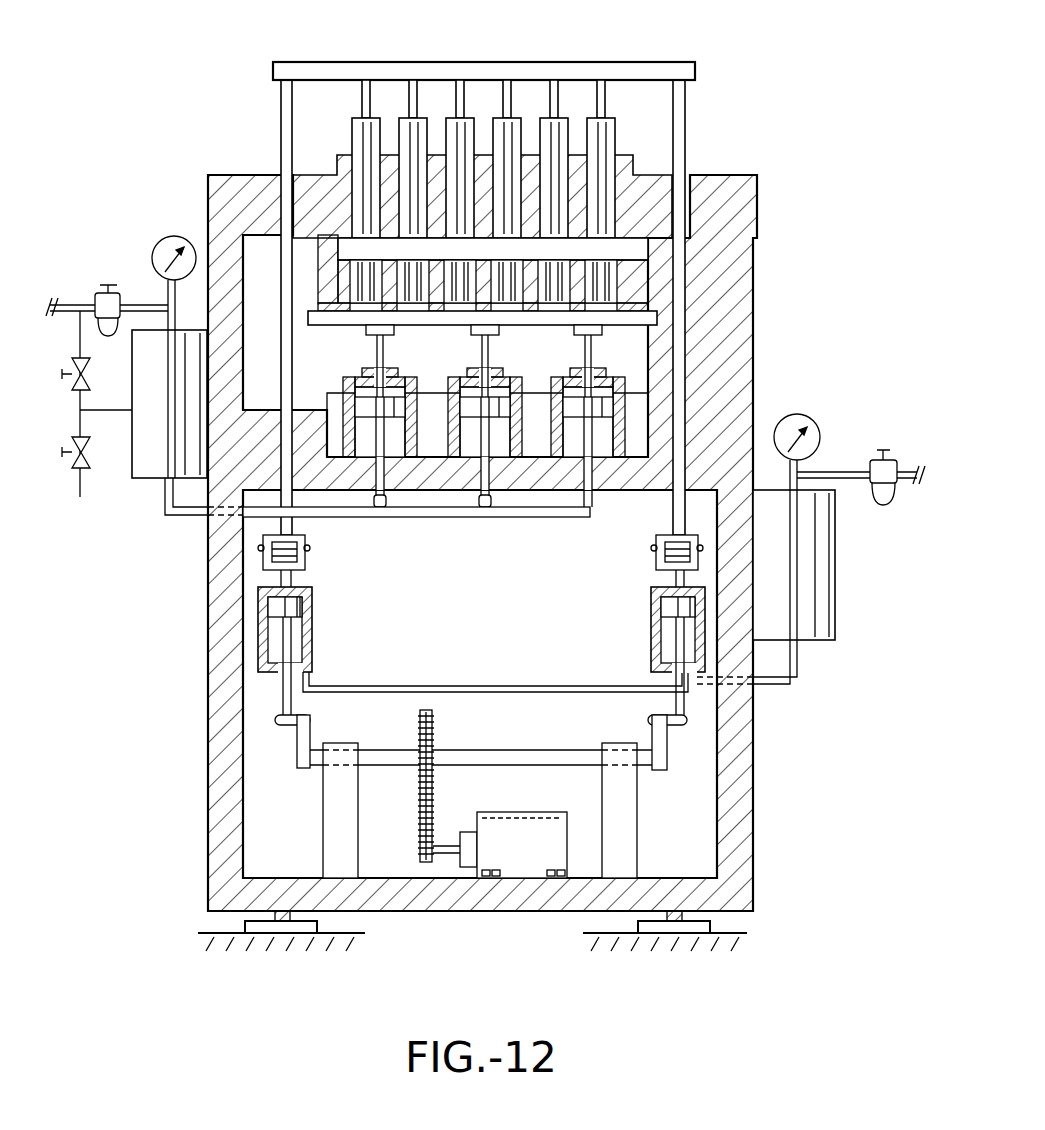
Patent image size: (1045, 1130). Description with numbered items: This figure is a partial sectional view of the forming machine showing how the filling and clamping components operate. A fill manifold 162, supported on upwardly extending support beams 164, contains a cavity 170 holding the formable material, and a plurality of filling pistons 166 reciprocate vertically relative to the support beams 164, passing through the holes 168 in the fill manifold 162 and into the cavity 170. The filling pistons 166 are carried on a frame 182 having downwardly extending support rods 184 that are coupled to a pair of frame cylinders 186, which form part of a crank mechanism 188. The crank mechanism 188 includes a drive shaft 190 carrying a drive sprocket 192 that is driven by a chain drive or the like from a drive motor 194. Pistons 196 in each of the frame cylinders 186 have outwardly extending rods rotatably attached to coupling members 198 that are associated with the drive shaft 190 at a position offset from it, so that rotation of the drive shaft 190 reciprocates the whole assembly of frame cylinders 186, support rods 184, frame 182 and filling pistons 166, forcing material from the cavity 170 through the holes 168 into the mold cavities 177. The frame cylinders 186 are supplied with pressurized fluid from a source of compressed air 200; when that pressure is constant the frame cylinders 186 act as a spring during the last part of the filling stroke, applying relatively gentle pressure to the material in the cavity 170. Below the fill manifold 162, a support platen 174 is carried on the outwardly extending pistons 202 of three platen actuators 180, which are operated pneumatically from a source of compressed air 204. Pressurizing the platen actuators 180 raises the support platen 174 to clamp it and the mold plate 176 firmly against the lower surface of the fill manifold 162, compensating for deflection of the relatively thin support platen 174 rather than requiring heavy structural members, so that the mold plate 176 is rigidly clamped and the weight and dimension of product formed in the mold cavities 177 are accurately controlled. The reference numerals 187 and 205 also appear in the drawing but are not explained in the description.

The fill manifold 162 is at (640, 275).
The support beams 164 is at (758, 210).
The filling pistons 166 is at (617, 117).
The holes 168 is at (610, 280).
The cavity 170 is at (340, 225).
The support platen 174 is at (660, 318).
The mold plate 176 is at (630, 305).
The mold cavities 177 is at (606, 327).
The platen actuators 180 is at (625, 403).
The frame 182 is at (365, 62).
The support rods 184 is at (291, 97).
The frame cylinders 186 is at (258, 633).
The pipe 187 is at (798, 682).
The crank mechanism 188 is at (380, 820).
The drive shaft 190 is at (545, 752).
The drive sprocket 192 is at (435, 740).
The drive motor 194 is at (513, 862).
The pistons 196 is at (305, 613).
The coupling members 198 is at (308, 770).
The source of compressed air 200 is at (838, 560).
The pistons 202 is at (374, 352).
The source of compressed air 204 is at (140, 478).
The pipe 205 is at (165, 516).